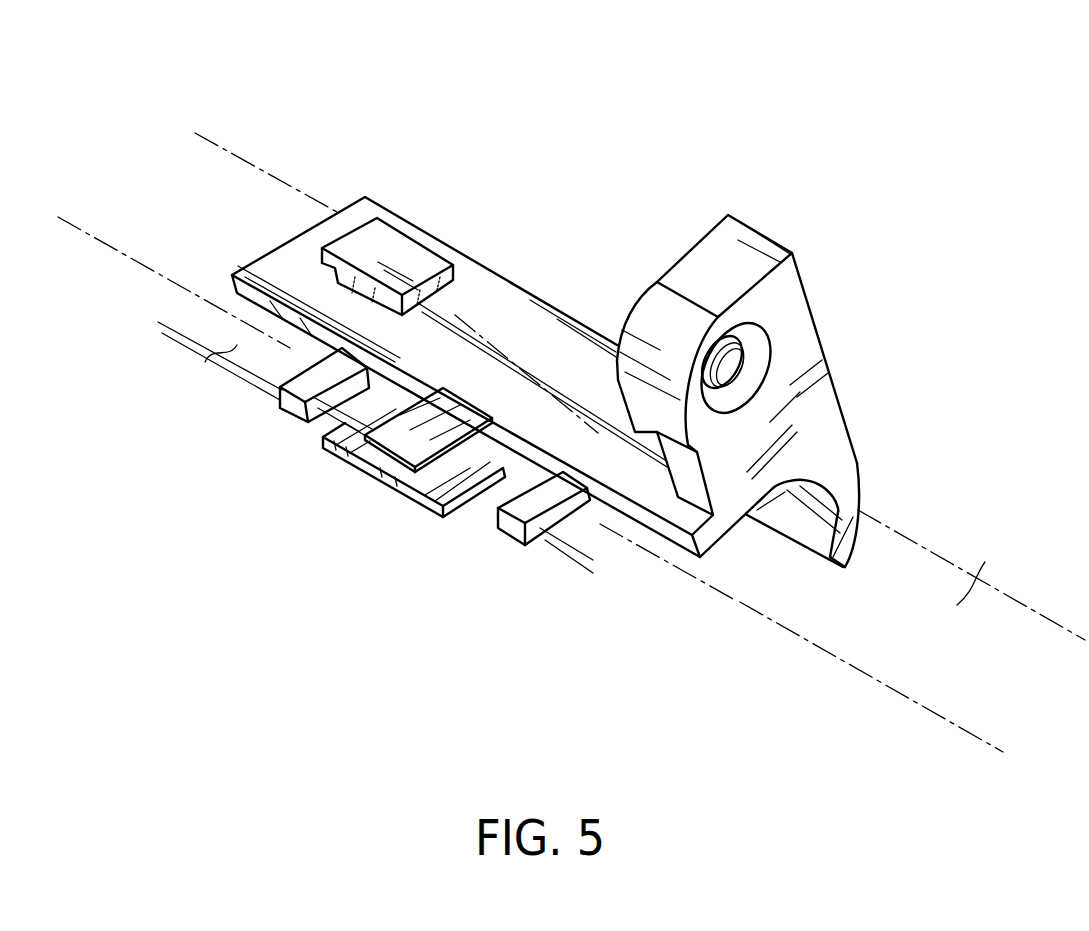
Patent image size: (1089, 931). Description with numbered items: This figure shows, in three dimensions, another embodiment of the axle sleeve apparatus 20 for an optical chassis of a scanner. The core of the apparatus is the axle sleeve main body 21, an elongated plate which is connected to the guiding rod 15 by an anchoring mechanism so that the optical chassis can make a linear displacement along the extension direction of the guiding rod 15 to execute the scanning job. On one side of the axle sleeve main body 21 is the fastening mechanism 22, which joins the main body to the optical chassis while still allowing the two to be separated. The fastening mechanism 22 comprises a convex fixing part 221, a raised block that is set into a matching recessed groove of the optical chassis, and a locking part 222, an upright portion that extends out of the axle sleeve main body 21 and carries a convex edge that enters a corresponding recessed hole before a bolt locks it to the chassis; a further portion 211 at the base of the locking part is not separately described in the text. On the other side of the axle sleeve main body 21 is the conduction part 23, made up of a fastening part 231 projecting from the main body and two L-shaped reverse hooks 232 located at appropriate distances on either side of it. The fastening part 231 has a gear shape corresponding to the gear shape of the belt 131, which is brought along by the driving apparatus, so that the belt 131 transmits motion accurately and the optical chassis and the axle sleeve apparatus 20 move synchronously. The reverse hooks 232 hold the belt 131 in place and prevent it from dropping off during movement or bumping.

The guiding rod 15 is at (985, 558).
The belt 131 is at (218, 350).
The axle sleeve apparatus for optical chassis 20 is at (926, 299).
The axle sleeve main body 21 is at (636, 487).
The notch 211 is at (833, 567).
The fastening mechanism 22 is at (780, 93).
The convex fixing part 221 is at (388, 245).
The locking part 222 is at (715, 252).
The conduction part 23 is at (512, 610).
The fastening part 231 is at (387, 470).
The reverse hook 232 is at (298, 405).